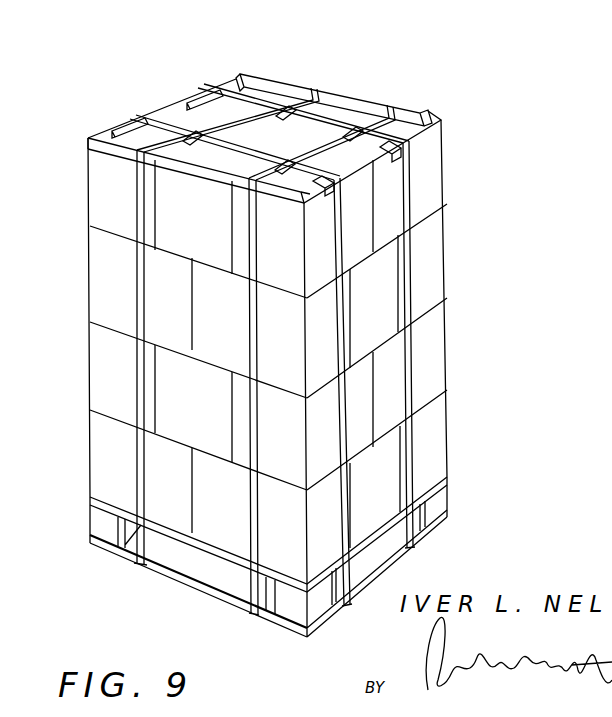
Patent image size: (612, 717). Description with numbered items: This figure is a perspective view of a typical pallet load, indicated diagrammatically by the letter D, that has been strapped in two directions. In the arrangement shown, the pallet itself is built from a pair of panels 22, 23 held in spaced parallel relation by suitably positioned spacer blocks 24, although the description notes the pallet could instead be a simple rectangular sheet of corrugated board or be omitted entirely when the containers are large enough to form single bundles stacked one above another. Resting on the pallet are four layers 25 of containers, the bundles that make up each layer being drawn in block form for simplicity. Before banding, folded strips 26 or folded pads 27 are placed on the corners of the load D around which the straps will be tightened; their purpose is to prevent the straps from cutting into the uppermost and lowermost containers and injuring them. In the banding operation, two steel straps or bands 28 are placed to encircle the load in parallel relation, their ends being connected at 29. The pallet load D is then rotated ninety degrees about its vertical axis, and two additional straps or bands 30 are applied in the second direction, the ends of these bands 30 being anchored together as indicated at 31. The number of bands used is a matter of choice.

The pallet load D is at (452, 218).
The panel 22 is at (190, 556).
The panel 23 is at (228, 588).
The spacer blocks 24 is at (100, 521).
The layers 25 is at (103, 207).
The folded strips 26 is at (137, 152).
The folded pads 27 is at (136, 121).
The steel straps or bands 28 is at (347, 522).
The end connection 29 is at (192, 132).
The additional straps or bands 30 is at (249, 243).
The anchoring point 31 is at (240, 95).